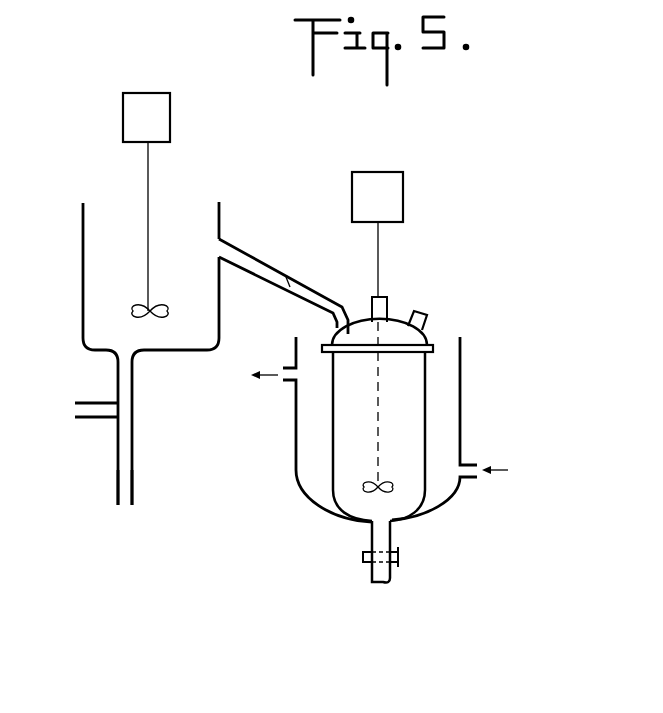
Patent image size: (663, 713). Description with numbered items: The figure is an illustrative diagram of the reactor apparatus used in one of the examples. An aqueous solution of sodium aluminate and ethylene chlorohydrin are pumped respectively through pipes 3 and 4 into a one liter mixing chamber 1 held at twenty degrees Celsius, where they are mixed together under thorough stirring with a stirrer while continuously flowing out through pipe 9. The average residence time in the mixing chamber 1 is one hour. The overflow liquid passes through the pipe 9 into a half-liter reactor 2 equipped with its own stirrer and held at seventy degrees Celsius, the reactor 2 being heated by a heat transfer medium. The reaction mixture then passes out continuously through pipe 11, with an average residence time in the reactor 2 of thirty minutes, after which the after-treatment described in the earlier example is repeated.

The mixing chamber 1 is at (151, 299).
The reactor 2 is at (378, 347).
The pipe 3 is at (72, 411).
The pipe 4 is at (125, 506).
The pipe 9 is at (274, 285).
The pipe 11 is at (380, 566).